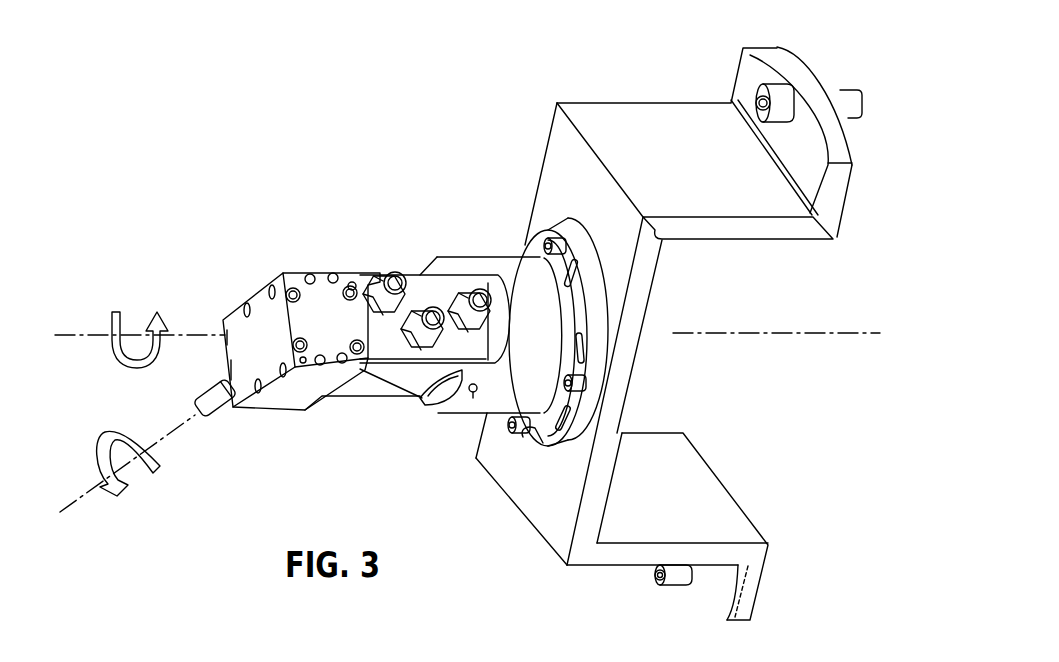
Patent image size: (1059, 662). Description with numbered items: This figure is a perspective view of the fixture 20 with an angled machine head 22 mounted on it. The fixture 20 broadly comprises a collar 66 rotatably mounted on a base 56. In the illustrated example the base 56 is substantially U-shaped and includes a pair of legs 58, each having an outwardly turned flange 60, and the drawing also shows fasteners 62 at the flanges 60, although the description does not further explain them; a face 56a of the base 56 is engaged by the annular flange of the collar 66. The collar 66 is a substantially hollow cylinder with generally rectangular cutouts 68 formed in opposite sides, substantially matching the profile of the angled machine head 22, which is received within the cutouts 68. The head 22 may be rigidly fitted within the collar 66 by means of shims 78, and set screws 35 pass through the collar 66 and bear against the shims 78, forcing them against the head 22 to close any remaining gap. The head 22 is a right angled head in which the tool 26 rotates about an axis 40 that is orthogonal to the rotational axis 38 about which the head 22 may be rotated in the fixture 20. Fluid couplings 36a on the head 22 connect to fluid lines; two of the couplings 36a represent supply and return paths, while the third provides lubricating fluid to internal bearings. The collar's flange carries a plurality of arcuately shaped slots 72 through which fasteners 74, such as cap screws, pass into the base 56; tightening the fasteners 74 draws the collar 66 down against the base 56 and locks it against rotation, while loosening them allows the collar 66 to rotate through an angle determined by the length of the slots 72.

The fixture 20 is at (811, 510).
The angled machine head 22 is at (240, 322).
The tool 26 is at (205, 417).
The set screws 35 is at (473, 398).
The fluid couplings 36a is at (400, 270).
The rotational axis 38 is at (70, 332).
The axis 40 is at (92, 487).
The base 56 is at (669, 333).
The face 56a is at (600, 187).
The legs 58 is at (680, 133).
The outwardly turned flange 60 is at (805, 157).
The fasteners 62 is at (781, 97).
The collar 66 is at (560, 293).
The cutouts 68 is at (500, 262).
The arcuately shaped slots 72 is at (540, 215).
The fasteners 74 is at (598, 207).
The shims 78 is at (419, 329).